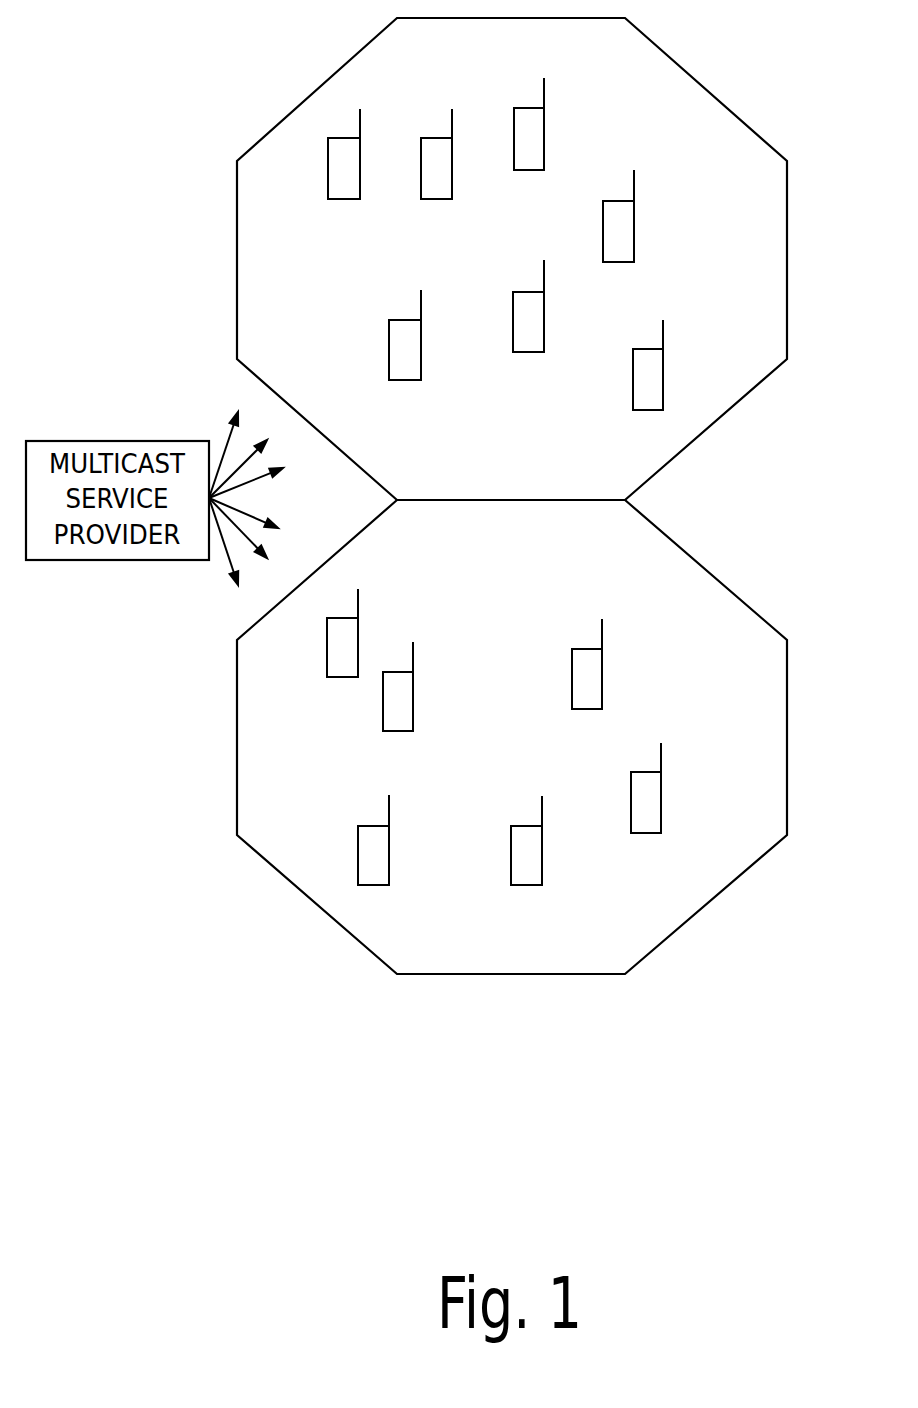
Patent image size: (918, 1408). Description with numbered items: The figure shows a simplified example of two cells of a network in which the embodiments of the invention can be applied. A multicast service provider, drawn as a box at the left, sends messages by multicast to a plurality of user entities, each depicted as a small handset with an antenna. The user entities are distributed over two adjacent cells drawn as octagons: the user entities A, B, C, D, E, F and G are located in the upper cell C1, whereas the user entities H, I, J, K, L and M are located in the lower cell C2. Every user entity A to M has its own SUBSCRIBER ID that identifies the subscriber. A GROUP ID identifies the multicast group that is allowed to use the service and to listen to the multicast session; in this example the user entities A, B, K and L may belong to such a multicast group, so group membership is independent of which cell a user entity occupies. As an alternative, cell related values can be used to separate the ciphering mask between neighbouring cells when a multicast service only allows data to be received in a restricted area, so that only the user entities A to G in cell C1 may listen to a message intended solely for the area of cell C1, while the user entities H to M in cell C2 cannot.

The cell C1 is at (512, 259).
The cell C2 is at (512, 737).
The user entity A is at (344, 154).
The user entity B is at (436, 154).
The user entity C is at (529, 124).
The user entity D is at (618, 216).
The user entity E is at (405, 335).
The user entity F is at (528, 306).
The user entity G is at (648, 365).
The user entity H is at (342, 633).
The user entity I is at (398, 686).
The user entity J is at (587, 664).
The user entity K is at (373, 840).
The user entity L is at (526, 840).
The user entity M is at (646, 788).